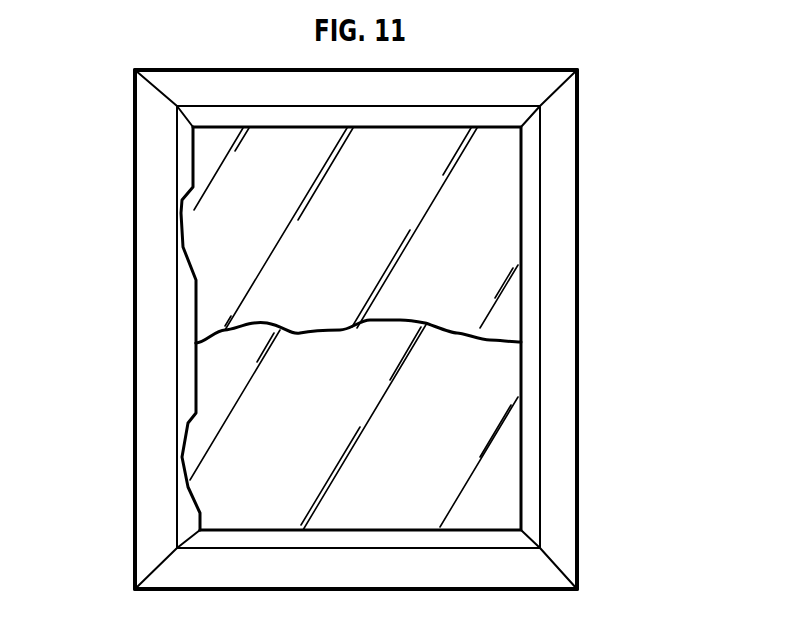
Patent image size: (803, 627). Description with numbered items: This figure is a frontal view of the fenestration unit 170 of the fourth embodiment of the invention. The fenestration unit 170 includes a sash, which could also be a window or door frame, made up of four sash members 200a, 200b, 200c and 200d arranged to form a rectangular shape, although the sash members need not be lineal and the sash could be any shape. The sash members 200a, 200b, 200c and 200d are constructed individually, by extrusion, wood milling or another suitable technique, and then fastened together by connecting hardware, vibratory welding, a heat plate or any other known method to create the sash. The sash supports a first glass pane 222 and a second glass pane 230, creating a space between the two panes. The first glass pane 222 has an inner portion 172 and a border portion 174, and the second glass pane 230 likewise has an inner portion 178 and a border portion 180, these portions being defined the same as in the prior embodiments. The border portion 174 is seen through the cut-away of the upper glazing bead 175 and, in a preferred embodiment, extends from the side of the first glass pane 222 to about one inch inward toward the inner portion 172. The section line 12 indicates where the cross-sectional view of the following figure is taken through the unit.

The fenestration unit 170 is at (369, 330).
The inner portion 172 is at (342, 442).
The border portion 174 is at (184, 461).
The upper glazing bead 175 is at (400, 119).
The inner portion 178 is at (339, 298).
The border portion 180 is at (186, 232).
The sash member 200a is at (567, 288).
The sash member 200b is at (353, 582).
The sash member 200c is at (143, 355).
The sash member 200d is at (446, 72).
The first glass pane 222 is at (489, 439).
The second glass pane 230 is at (478, 256).
The section line 12- 12 is at (228, 154).